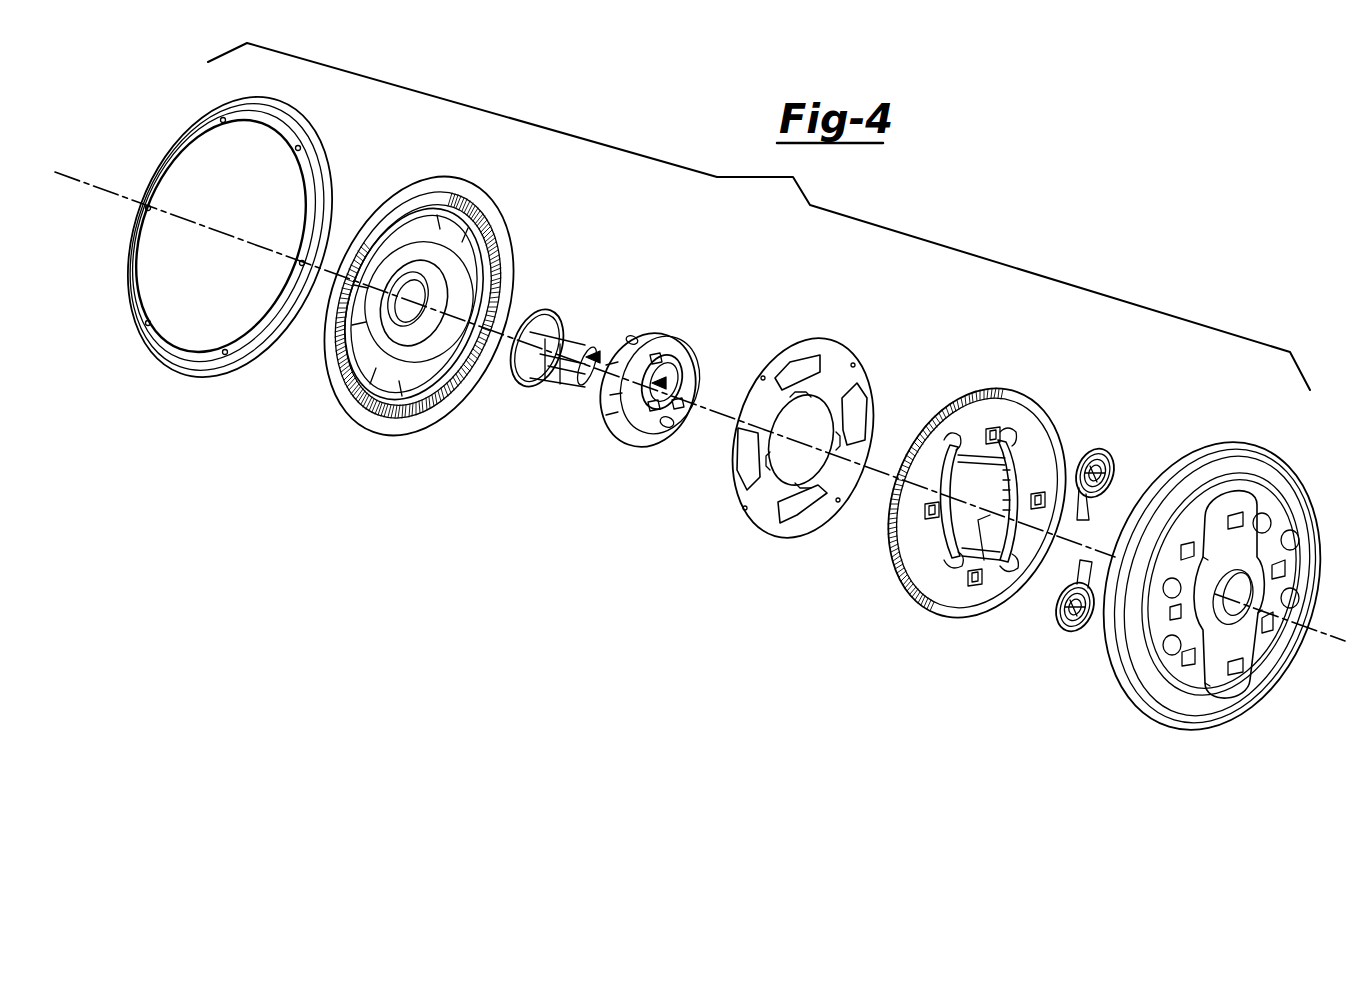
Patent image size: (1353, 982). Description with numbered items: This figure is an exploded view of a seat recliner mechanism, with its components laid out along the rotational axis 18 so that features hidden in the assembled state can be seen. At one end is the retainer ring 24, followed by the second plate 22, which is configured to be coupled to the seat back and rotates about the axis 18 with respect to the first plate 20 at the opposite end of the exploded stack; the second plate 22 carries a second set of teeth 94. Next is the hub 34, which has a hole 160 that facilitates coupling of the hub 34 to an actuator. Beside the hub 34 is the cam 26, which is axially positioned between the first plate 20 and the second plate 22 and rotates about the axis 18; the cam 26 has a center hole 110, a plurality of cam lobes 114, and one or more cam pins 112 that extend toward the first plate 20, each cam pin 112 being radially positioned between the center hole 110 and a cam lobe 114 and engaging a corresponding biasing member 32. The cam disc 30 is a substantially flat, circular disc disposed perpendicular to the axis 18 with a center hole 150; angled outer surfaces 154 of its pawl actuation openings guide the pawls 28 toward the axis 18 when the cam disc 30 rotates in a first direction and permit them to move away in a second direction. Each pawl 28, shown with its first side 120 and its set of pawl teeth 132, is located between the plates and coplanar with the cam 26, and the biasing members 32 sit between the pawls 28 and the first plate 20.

The axis 18 is at (121, 198).
The retainer ring 24 is at (181, 368).
The second plate 22 is at (436, 178).
The second set of teeth 94 is at (497, 261).
The hub 34 is at (561, 387).
The center hole 110 is at (673, 337).
The cam 26 is at (695, 352).
The cam lobes 114 is at (655, 333).
The cam pins 112 is at (630, 337).
The hole 160 is at (590, 355).
The cam disc 30 is at (847, 345).
The center hole 150 is at (811, 471).
The outer surface 154 is at (742, 451).
The pawl teeth 132 is at (895, 543).
The pawl 28 is at (1032, 428).
The first side 120 is at (1023, 481).
The biasing member 32 is at (1113, 477).
The first plate 20 is at (1117, 678).